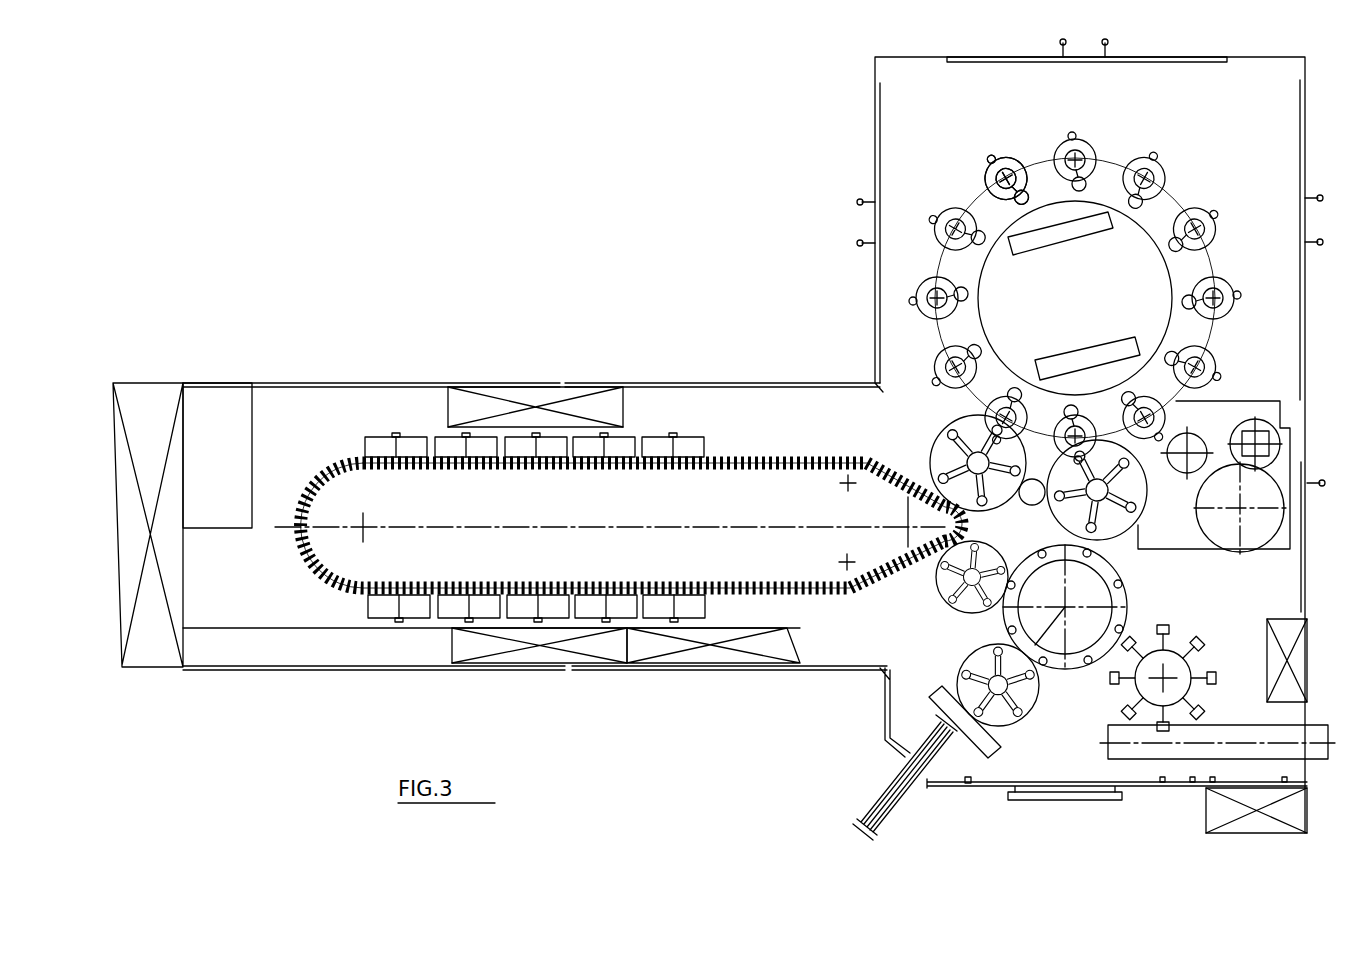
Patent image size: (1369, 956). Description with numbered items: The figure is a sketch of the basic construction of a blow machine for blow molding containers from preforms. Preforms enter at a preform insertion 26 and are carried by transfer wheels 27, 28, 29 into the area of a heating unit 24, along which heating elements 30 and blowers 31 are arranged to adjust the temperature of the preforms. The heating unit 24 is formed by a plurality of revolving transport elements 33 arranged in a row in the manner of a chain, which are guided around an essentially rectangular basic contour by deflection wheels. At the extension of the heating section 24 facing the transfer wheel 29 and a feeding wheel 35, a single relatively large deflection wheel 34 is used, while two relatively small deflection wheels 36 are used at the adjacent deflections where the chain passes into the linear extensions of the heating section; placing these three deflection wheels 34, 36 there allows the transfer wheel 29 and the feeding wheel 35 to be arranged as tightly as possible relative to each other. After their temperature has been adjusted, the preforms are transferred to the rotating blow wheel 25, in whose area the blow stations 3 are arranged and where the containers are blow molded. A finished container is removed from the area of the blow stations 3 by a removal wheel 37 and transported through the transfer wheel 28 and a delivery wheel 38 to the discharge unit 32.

The blow stations 3 is at (913, 273).
The heating unit 24 is at (662, 415).
The blow wheel 25 is at (1007, 217).
The preform insertion 26 is at (913, 777).
The transfer wheel 27 is at (1013, 730).
The transfer wheel 28 is at (1067, 663).
The transfer wheel 29 is at (960, 600).
The heating elements 30 is at (413, 443).
The blowers 31 is at (528, 395).
The discharge unit 32 is at (1318, 750).
The revolving transport elements 33 is at (333, 588).
The deflection wheel 34 is at (363, 527).
The feeding wheel 35 is at (955, 413).
The deflection wheels 36 is at (848, 482).
The removal wheel 37 is at (1137, 477).
The delivery wheel 38 is at (1176, 695).